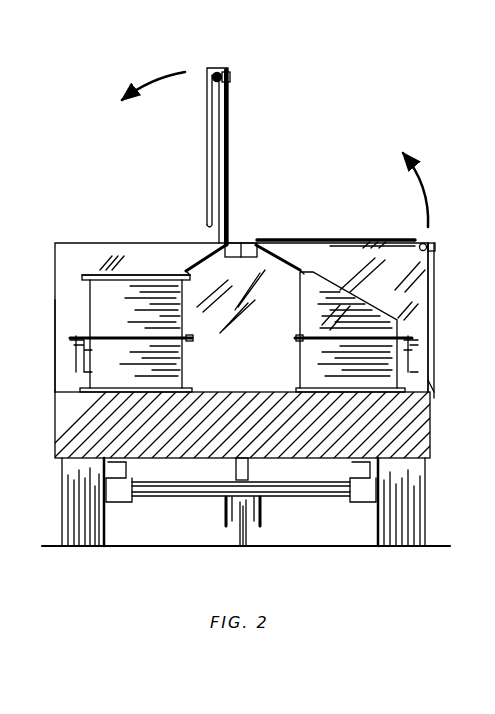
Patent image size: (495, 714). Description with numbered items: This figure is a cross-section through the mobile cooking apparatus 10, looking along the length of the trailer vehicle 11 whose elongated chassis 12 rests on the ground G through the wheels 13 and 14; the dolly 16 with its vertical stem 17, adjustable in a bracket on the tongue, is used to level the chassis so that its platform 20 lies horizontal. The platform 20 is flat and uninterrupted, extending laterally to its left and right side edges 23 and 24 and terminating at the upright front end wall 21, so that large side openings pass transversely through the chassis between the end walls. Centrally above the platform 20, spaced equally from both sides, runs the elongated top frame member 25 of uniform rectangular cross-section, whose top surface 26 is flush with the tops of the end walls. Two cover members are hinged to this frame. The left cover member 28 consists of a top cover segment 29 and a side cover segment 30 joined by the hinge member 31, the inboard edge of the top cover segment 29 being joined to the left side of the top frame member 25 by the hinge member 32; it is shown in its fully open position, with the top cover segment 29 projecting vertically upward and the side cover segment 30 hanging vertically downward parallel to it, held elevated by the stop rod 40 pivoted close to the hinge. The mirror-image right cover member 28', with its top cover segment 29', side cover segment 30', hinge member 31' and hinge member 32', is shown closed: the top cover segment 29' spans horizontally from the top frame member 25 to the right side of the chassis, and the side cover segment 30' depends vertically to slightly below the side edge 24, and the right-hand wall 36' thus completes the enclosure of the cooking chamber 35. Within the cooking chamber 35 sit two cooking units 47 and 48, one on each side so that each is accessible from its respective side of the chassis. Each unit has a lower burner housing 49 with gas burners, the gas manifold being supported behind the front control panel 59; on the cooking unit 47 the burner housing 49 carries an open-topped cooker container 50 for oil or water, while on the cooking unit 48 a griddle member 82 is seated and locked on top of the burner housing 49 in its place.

The mobile cooking apparatus 10 is at (295, 198).
The trailer vehicle 11 is at (395, 463).
The chassis 12 is at (405, 440).
The wheel 13 is at (82, 515).
The wheel 14 is at (402, 511).
The dolly 16 is at (250, 512).
The vertical stem 17 is at (243, 470).
The platform 20 is at (228, 391).
The front end wall 21 is at (250, 355).
The left side edge 23 is at (56, 393).
The right side edge 24 is at (433, 389).
The top frame member 25 is at (241, 250).
The top surface 26 is at (238, 248).
The left cover member 28 is at (250, 78).
The right cover member 28' is at (452, 247).
The top cover segment 29 is at (240, 156).
The top cover segment 29' is at (336, 228).
The side cover segment 30 is at (190, 159).
The side cover segment 30' is at (454, 320).
The hinge member 31 is at (231, 59).
The hinge member 31' is at (445, 232).
The hinge member 32 is at (195, 245).
The hinge member 32' is at (275, 244).
The cooking chamber 35 is at (406, 273).
The tank side wall 36' is at (451, 317).
The stop rod 40 is at (185, 266).
The cooking unit 47 is at (136, 270).
The cooking unit 48 is at (368, 240).
The burner housing 49 is at (124, 382).
The cooker container 50 is at (122, 307).
The front control panel 59 is at (70, 344).
The griddle member 82 is at (318, 293).
The ground G is at (434, 545).